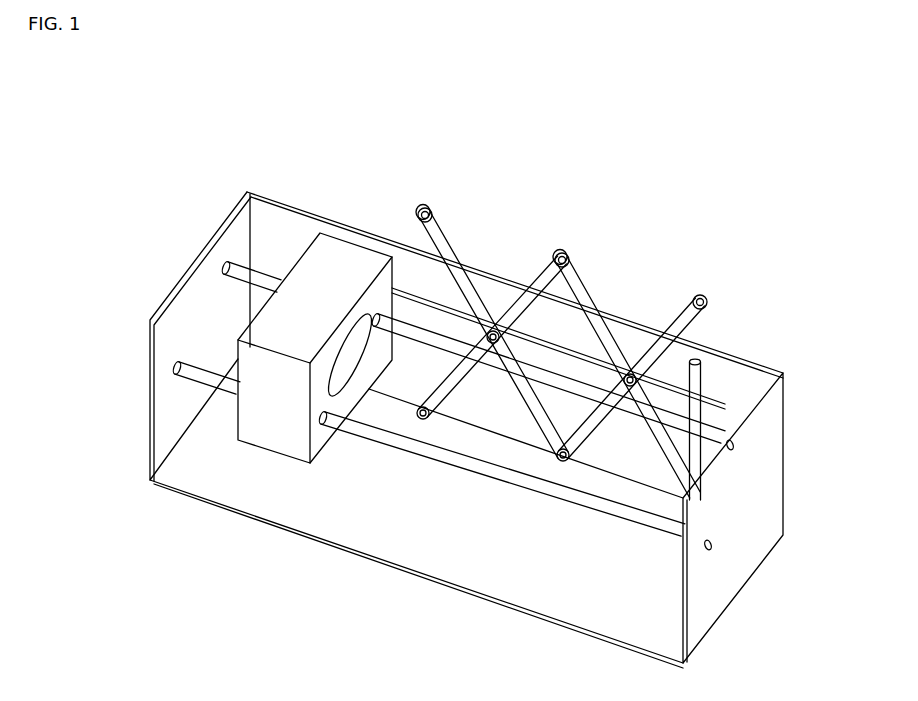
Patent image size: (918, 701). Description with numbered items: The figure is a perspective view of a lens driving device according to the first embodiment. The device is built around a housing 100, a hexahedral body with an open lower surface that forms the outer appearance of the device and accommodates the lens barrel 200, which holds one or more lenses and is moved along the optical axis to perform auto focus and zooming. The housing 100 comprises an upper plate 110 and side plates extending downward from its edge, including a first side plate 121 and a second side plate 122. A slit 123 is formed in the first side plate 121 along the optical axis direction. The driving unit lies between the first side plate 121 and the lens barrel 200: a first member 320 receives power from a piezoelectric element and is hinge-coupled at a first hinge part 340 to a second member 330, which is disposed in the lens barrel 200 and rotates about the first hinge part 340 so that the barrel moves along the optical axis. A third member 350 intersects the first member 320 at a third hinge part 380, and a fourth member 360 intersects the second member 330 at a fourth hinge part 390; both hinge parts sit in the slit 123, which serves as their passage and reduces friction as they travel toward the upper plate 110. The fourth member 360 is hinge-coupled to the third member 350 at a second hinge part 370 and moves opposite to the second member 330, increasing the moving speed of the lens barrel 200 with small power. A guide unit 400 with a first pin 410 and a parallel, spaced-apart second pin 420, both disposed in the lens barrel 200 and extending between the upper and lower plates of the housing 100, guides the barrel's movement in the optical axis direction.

The housing 100 is at (185, 250).
The upper plate 110 is at (237, 233).
The first side plate 121 is at (283, 225).
The second side plate 122 is at (197, 475).
The slit 123 is at (717, 393).
The lens barrel 200 is at (273, 443).
The first member 320 is at (683, 310).
The second member 330 is at (440, 237).
The first hinge part 340 is at (560, 462).
The third member 350 is at (585, 292).
The fourth member 360 is at (533, 282).
The second hinge part 370 is at (562, 255).
The third hinge part 380 is at (700, 347).
The fourth hinge part 390 is at (492, 330).
The guide unit 400 is at (378, 398).
The first pin 410 is at (192, 372).
The second pin 420 is at (233, 277).